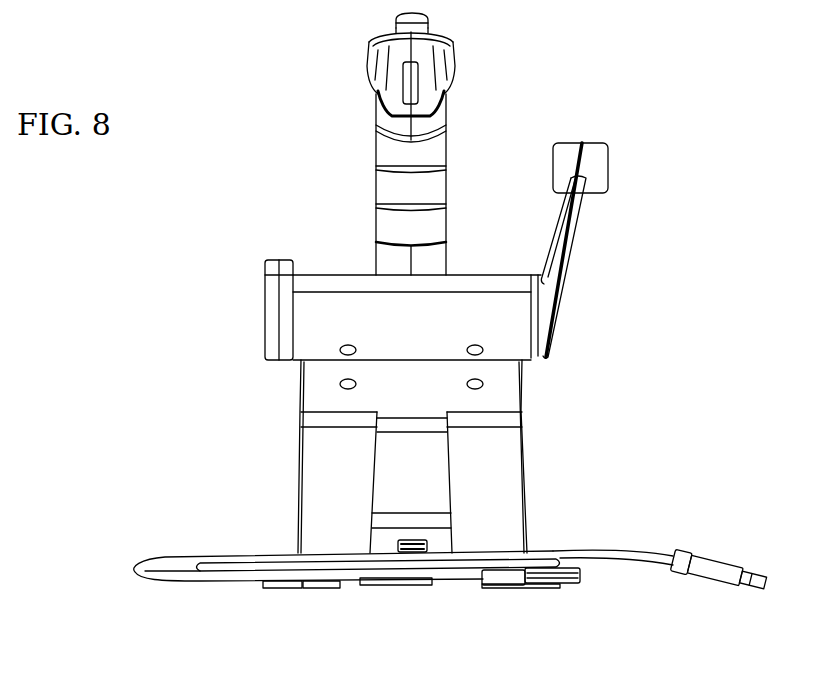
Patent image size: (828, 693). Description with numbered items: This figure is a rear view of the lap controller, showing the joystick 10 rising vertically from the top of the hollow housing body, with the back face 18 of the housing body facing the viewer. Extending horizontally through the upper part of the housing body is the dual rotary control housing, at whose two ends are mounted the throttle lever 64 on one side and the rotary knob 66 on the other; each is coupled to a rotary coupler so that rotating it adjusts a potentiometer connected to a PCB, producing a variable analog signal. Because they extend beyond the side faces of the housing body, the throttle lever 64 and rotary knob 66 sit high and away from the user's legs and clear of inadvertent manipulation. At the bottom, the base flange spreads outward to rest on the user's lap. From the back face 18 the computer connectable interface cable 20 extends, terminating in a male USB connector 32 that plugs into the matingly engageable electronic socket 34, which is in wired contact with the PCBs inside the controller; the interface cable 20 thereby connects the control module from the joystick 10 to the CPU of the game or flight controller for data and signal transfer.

The joystick 10 is at (450, 112).
The throttle lever 64 is at (605, 152).
The rotary knob 66 is at (266, 300).
The back face 18 is at (321, 488).
The electronic socket 34 is at (418, 540).
The interface cable 20 is at (403, 580).
The male USB connector 32 is at (722, 567).